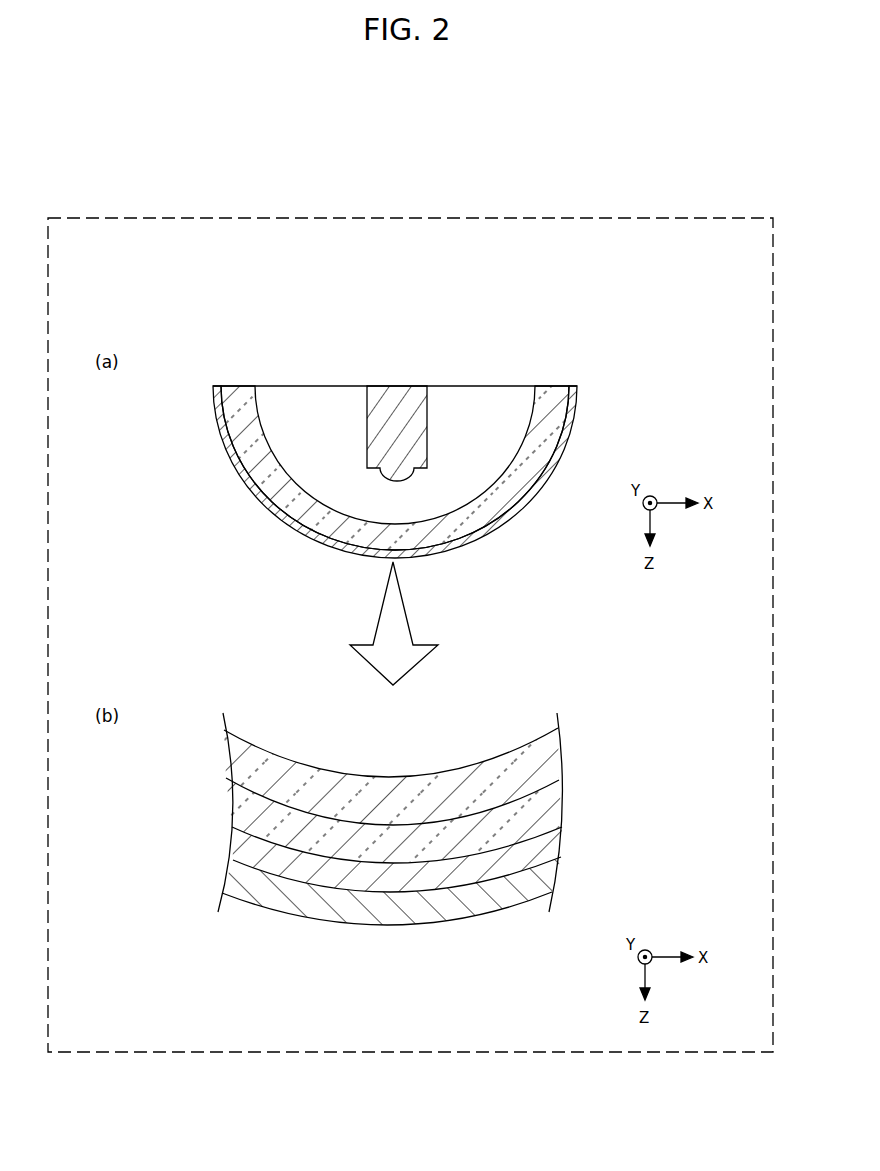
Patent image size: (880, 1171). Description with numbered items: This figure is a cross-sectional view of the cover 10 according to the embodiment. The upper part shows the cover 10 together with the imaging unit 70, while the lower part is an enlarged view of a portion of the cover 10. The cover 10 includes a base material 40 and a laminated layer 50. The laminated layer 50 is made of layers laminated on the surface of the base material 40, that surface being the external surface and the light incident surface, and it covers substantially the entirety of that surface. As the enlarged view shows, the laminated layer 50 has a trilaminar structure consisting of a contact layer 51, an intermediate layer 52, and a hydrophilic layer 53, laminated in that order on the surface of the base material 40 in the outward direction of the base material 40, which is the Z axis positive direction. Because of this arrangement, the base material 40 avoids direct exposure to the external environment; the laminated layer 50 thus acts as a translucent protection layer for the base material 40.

The cover 10 is at (469, 609).
The base material 40 is at (550, 392).
The laminated layer 50 is at (444, 628).
The contact layer 51 is at (558, 806).
The intermediate layer 52 is at (560, 841).
The hydrophilic layer 53 is at (425, 891).
The imaging unit 70 is at (397, 400).